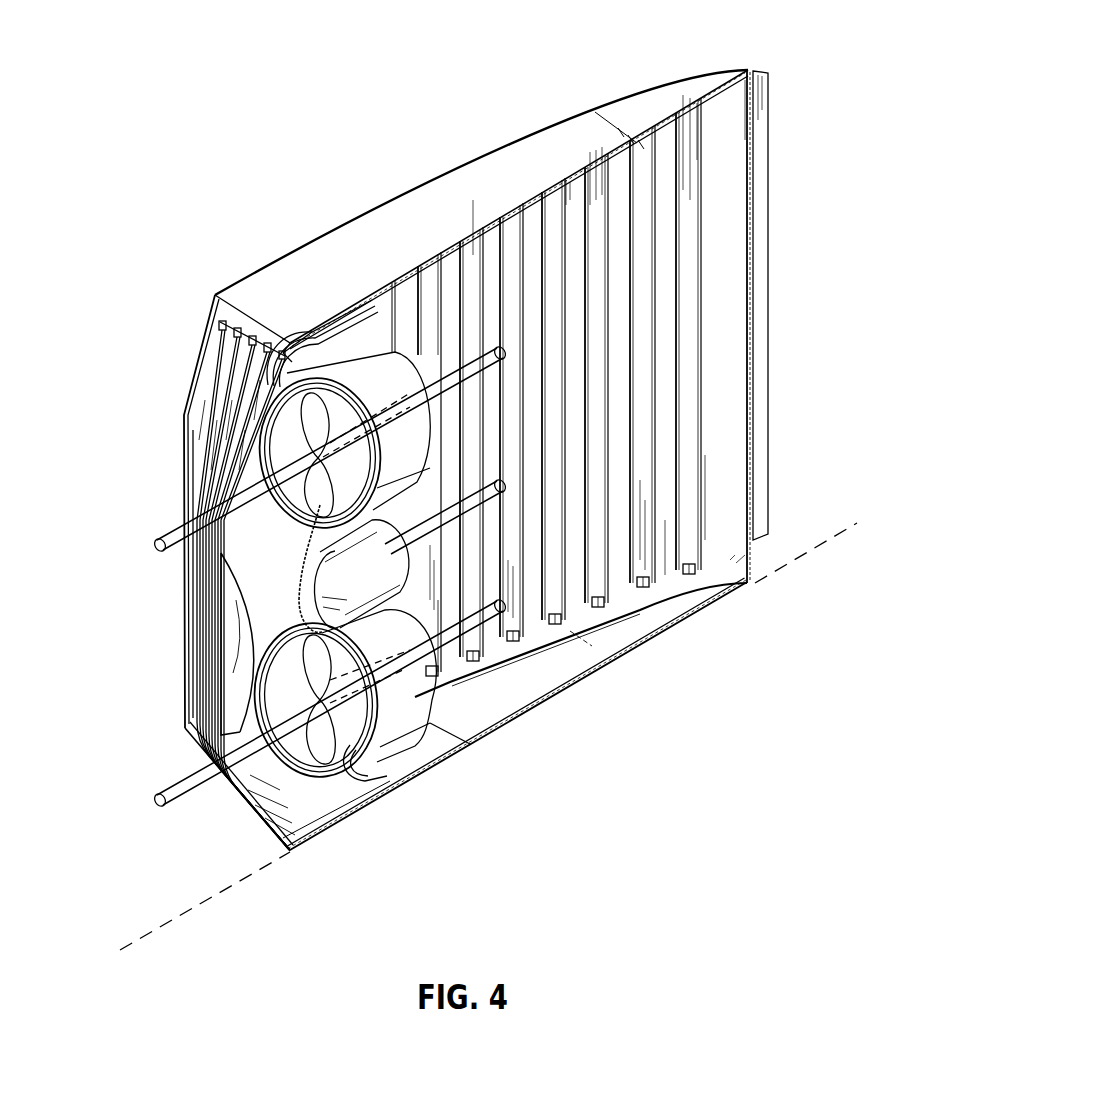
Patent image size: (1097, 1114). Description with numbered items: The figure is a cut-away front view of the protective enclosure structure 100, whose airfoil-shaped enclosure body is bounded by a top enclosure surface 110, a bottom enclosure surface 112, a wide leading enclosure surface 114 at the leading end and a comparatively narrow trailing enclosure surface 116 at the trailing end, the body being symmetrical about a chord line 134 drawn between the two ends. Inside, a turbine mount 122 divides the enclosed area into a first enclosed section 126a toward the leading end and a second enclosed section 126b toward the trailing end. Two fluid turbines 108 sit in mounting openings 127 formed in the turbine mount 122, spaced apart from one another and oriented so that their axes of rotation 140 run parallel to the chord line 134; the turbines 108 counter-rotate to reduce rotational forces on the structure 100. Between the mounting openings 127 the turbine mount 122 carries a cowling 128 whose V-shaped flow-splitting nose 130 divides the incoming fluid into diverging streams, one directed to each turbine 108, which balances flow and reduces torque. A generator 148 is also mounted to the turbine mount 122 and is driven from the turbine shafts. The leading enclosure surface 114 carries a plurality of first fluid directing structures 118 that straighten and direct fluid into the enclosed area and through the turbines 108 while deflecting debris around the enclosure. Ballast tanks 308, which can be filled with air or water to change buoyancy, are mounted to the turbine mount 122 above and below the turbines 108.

The enclosure structure 100 is at (406, 62).
The fluid turbines 108 is at (363, 377).
The top enclosure surface 110 is at (422, 200).
The bottom enclosure surface 112 is at (583, 647).
The leading enclosure surface 114 is at (215, 366).
The trailing enclosure surface 116 is at (727, 158).
The first fluid directing structures 118 is at (214, 424).
The turbine mount 122 is at (293, 359).
The first enclosed section 126a is at (235, 672).
The second enclosed section 126b is at (650, 437).
The mounting openings 127 is at (283, 445).
The cowling 128 is at (272, 540).
The flow-splitting nose 130 is at (290, 592).
The chord line 134 is at (180, 914).
The axes of rotation 140 is at (203, 513).
The generator 148 is at (395, 578).
The ballast tanks 308 is at (323, 333).